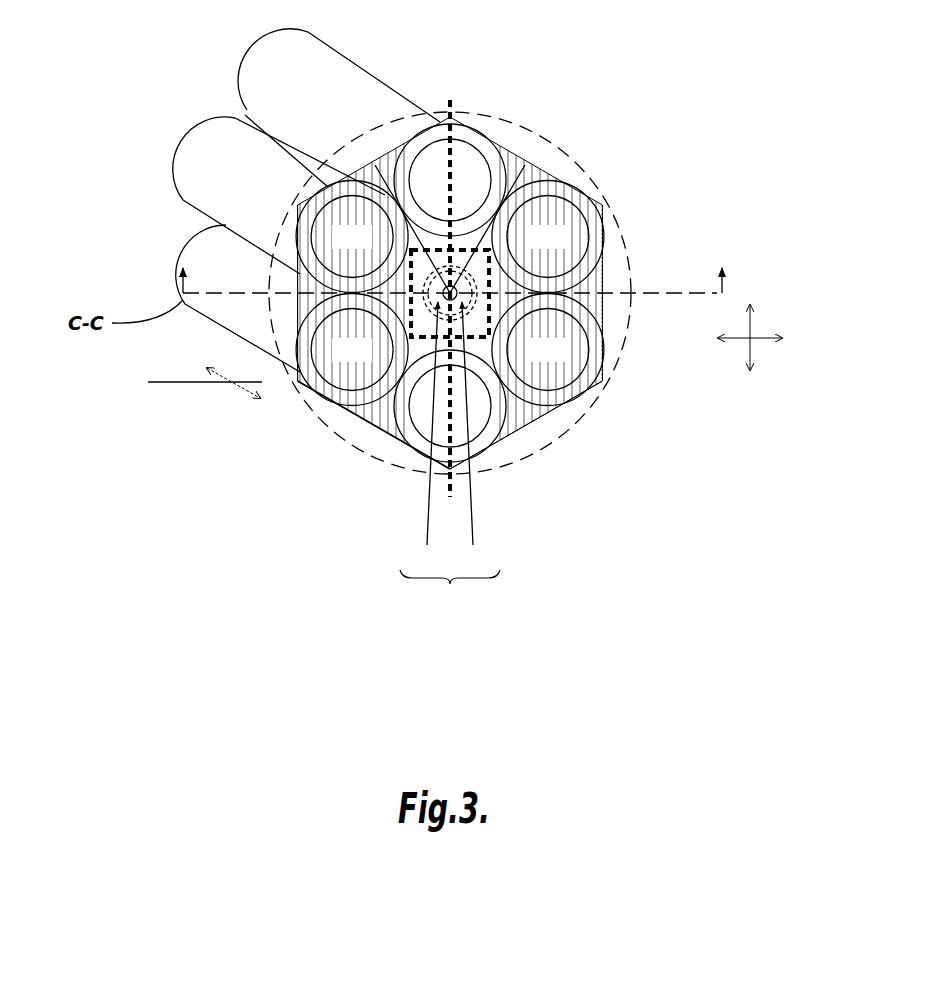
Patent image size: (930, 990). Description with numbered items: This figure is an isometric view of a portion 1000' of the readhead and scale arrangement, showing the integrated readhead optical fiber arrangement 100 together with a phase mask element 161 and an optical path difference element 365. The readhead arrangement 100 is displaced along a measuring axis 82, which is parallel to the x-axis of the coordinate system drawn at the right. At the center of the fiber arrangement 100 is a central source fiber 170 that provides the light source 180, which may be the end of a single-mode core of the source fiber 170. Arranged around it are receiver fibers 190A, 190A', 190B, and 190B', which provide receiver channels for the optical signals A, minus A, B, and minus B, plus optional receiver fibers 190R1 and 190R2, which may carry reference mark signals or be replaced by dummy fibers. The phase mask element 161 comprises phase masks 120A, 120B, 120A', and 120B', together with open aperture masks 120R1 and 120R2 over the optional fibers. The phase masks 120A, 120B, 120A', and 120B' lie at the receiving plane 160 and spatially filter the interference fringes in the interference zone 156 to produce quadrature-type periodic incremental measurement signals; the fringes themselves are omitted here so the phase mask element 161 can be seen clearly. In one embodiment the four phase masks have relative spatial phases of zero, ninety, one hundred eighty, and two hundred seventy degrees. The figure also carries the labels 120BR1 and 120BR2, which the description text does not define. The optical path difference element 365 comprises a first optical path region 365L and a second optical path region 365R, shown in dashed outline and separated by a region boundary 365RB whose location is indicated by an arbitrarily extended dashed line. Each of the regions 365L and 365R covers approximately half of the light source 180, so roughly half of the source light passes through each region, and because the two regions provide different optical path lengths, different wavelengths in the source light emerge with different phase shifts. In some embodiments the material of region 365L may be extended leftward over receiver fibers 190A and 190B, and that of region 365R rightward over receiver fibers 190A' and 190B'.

The integrated readhead optical fiber arrangement 100 is at (362, 86).
The portion of the readhead and scale arrangement 1000' is at (721, 51).
The lens barrel 120BR2 is at (398, 146).
The receiver fiber 190A is at (256, 180).
The phase mask 120A is at (191, 258).
The phase mask 120B is at (162, 262).
The receiving plane 160 is at (190, 383).
The receiver fiber 190B is at (304, 377).
The receiver fiber 190R1 is at (345, 445).
The open aperture mask 120R1 is at (383, 425).
The interference zone 156 is at (393, 452).
The first optical path region 365L is at (426, 436).
The second optical path region 365R is at (479, 436).
The optical path difference element 365 is at (450, 586).
The region boundary 365RB is at (462, 122).
The receiver fiber 190R2 is at (510, 163).
The open aperture mask 120R2 is at (532, 183).
The central source fiber 170 is at (587, 177).
The receiver fiber 190B' is at (596, 228).
The phase mask element 161 is at (609, 228).
The light source 180 is at (452, 292).
The phase mask 120B' is at (654, 280).
The phase mask 120A' is at (649, 303).
The measuring axis 82 is at (781, 324).
The receiver fiber 190A' is at (586, 365).
The barrel BR1 120BR1 is at (512, 428).